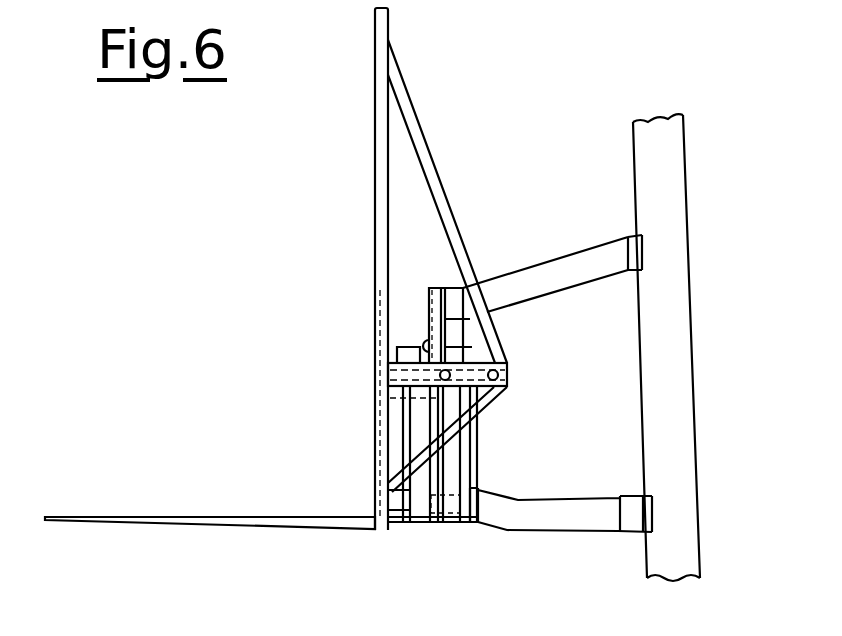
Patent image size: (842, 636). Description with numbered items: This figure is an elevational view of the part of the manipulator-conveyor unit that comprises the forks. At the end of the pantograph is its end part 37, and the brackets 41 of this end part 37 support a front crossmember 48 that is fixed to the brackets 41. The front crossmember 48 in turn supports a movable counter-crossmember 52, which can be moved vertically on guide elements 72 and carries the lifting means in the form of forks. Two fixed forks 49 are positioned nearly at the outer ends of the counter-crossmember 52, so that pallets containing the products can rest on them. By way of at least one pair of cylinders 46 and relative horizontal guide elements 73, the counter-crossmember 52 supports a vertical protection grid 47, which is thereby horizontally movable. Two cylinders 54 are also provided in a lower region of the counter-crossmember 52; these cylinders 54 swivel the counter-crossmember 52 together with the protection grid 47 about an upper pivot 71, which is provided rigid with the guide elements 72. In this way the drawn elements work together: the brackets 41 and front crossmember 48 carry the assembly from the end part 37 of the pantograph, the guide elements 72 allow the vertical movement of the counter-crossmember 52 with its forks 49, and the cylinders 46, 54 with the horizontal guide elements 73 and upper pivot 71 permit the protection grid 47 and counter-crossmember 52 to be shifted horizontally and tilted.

The end part 37 is at (690, 389).
The brackets 41 is at (582, 258).
The cylinders 46 is at (510, 372).
The vertical protection grid 47 is at (382, 35).
The front crossmember 48 is at (471, 455).
The fixed forks 49 is at (162, 517).
The counter-crossmember 52 is at (433, 524).
The cylinders 54 is at (455, 524).
The upper pivot 71 is at (424, 342).
The guide elements 72 is at (447, 287).
The horizontal guide elements 73 is at (443, 372).